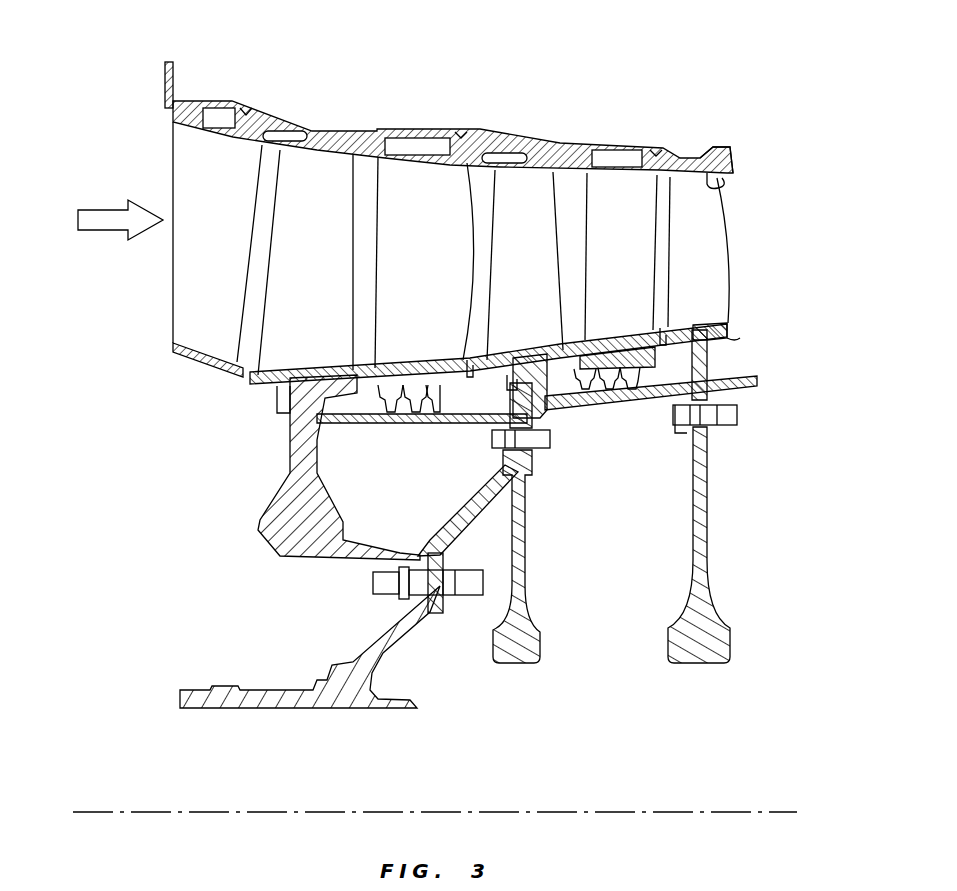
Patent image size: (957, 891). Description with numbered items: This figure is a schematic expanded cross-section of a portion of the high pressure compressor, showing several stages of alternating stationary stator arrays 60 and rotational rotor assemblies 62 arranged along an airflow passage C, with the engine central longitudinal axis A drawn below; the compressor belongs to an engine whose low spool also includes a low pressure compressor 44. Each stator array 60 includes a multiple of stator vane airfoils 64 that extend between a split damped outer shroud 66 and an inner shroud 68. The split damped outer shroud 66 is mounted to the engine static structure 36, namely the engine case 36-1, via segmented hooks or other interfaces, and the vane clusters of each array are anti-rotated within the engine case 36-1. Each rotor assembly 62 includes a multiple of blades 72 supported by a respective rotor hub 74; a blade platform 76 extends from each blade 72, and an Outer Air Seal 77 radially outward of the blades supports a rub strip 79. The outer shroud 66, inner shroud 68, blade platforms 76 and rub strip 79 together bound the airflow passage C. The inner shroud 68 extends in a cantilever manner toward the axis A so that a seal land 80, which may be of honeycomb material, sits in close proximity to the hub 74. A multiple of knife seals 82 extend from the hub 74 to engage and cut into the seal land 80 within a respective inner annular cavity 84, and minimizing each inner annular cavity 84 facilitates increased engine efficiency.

The engine static structure 36 is at (742, 140).
The engine case 36-1 is at (528, 150).
The low pressure compressor 44 is at (633, 57).
The stator array 60 is at (417, 178).
The rotor assembly 62 is at (313, 170).
The stator vane airfoil 64 is at (220, 245).
The split damped outer shroud 66 is at (250, 108).
The inner shroud 68 is at (203, 350).
The blade 72 is at (327, 278).
The rotor hub 74 is at (280, 522).
The blade platform 76 is at (714, 333).
The Outer Air Seal 77 is at (716, 147).
The rub strip 79 is at (716, 188).
The seal land 80 is at (403, 362).
The knife seal 82 is at (443, 405).
The inner annular cavity 84 is at (357, 398).
The engine central longitudinal axis A is at (780, 812).
The airflow passage C is at (103, 210).